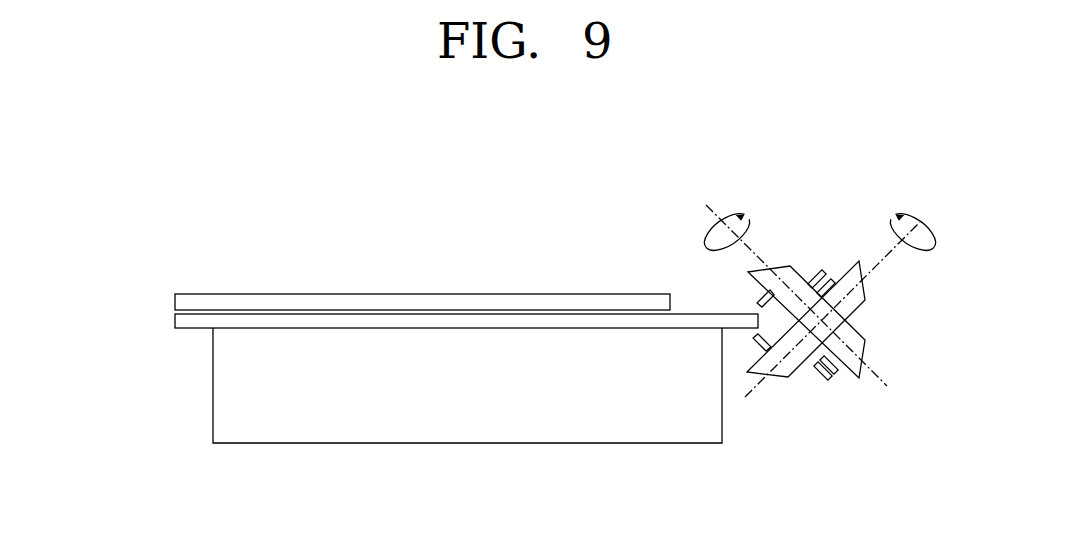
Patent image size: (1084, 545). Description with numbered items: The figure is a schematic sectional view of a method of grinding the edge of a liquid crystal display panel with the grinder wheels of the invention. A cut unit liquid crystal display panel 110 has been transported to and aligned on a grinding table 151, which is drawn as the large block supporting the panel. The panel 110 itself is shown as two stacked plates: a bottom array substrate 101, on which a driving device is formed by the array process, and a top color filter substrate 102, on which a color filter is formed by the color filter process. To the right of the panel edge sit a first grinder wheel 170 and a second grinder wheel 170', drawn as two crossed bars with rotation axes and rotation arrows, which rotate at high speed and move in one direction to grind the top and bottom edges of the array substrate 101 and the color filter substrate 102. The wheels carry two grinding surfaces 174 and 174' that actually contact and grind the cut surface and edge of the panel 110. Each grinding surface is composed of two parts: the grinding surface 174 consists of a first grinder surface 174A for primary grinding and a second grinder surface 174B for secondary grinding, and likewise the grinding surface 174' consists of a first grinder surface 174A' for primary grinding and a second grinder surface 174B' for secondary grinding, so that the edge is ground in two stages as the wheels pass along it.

The unit liquid crystal display panel 110 is at (413, 311).
The array substrate 101 is at (175, 322).
The color filter substrate 102 is at (175, 300).
The grinding table 151 is at (222, 397).
The first grinder wheel 170 is at (846, 319).
The second grinder wheel 170' is at (848, 322).
The grinding surface 174 is at (819, 422).
The first grinder surface 174A is at (800, 404).
The second grinder surface 174B is at (843, 401).
The grinding surface 174' is at (820, 224).
The first grinder surface 174A' is at (797, 244).
The second grinder surface 174B' is at (844, 248).